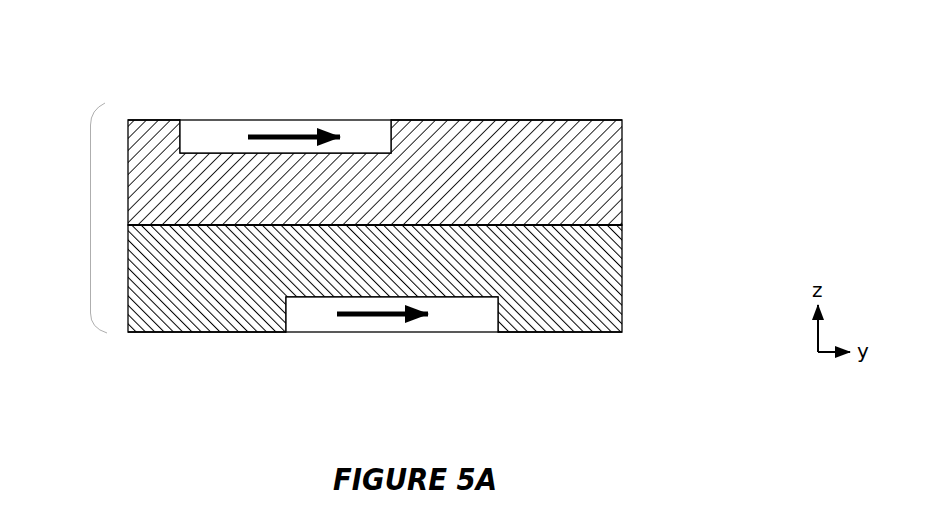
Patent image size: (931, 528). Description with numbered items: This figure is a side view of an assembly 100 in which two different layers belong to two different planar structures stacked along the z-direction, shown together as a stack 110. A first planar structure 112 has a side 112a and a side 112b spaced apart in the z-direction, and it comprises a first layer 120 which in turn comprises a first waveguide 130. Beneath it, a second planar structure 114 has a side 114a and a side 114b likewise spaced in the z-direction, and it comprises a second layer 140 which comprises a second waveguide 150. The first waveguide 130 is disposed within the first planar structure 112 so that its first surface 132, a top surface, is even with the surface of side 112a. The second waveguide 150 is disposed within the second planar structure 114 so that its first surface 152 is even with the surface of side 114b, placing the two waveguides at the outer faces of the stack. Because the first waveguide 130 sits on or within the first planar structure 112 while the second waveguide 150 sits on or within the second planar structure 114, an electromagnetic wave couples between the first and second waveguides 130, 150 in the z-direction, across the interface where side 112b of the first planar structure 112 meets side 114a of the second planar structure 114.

The optical device 100 is at (416, 212).
The substrate stack 110 is at (393, 230).
The first planar structure 112 is at (433, 138).
The side of first planar structure 112a is at (562, 118).
The side of first planar structure 112b is at (532, 223).
The second planar structure 114 is at (416, 316).
The side of second planar structure 114a is at (575, 227).
The side of second planar structure 114b is at (178, 333).
The first layer 120 is at (487, 85).
The first waveguide 130 is at (368, 140).
The first surface of first waveguide 132 is at (247, 119).
The second layer 140 is at (557, 362).
The second waveguide 150 is at (317, 317).
The first surface of second waveguide 152 is at (438, 332).